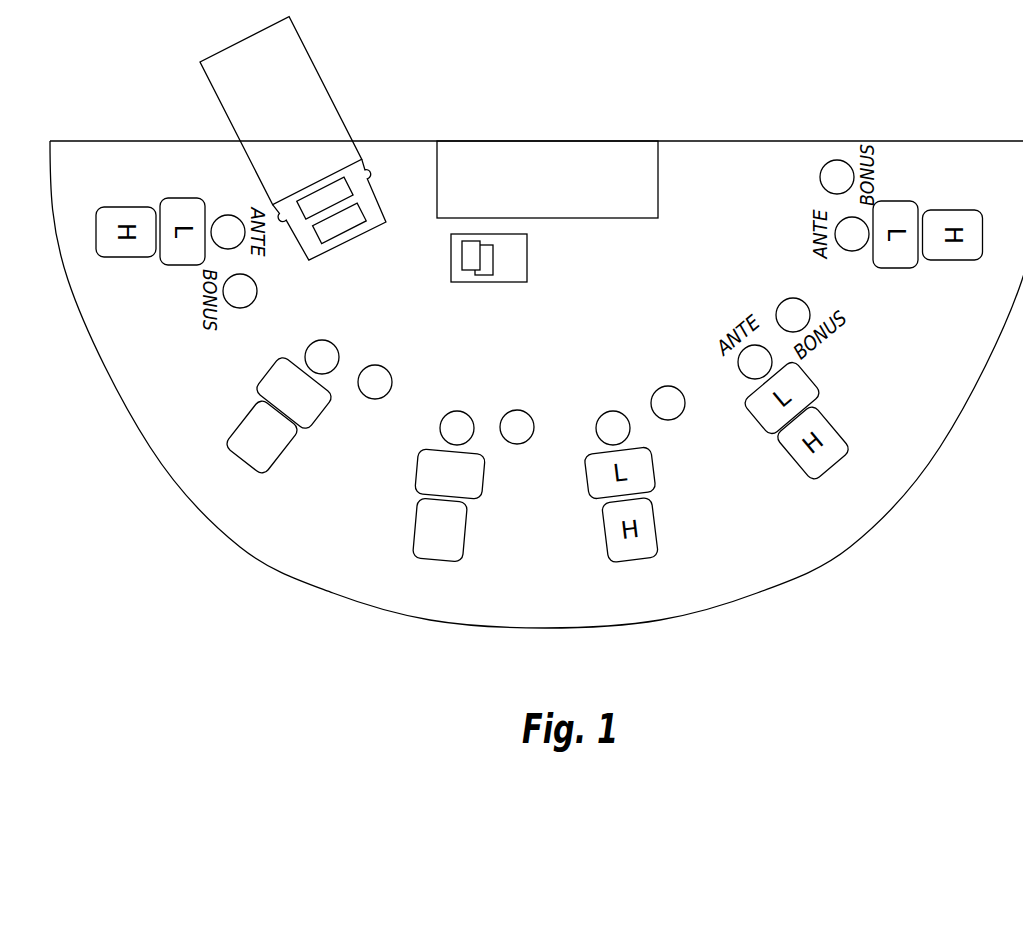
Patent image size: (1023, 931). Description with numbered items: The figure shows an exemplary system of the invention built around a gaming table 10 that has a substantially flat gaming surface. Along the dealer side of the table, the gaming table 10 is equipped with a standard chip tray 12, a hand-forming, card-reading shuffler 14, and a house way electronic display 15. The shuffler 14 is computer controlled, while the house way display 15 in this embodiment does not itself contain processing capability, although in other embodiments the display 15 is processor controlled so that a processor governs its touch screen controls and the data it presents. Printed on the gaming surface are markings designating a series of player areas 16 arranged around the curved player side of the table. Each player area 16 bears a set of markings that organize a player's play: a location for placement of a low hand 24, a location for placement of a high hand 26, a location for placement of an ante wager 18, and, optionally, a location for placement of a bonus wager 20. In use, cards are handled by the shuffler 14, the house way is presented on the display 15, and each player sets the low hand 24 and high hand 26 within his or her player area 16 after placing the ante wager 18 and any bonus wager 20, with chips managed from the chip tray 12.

The gaming table 10 is at (710, 165).
The chip tray 12 is at (450, 166).
The hand-forming, card-reading shuffler 14 is at (313, 117).
The house way electronic display 15 is at (528, 248).
The player areas 16 is at (556, 392).
The ante wager placement 18 is at (845, 252).
The bonus wager placement 20 is at (818, 180).
The low hand placement 24 is at (325, 413).
The high hand placement 26 is at (290, 442).